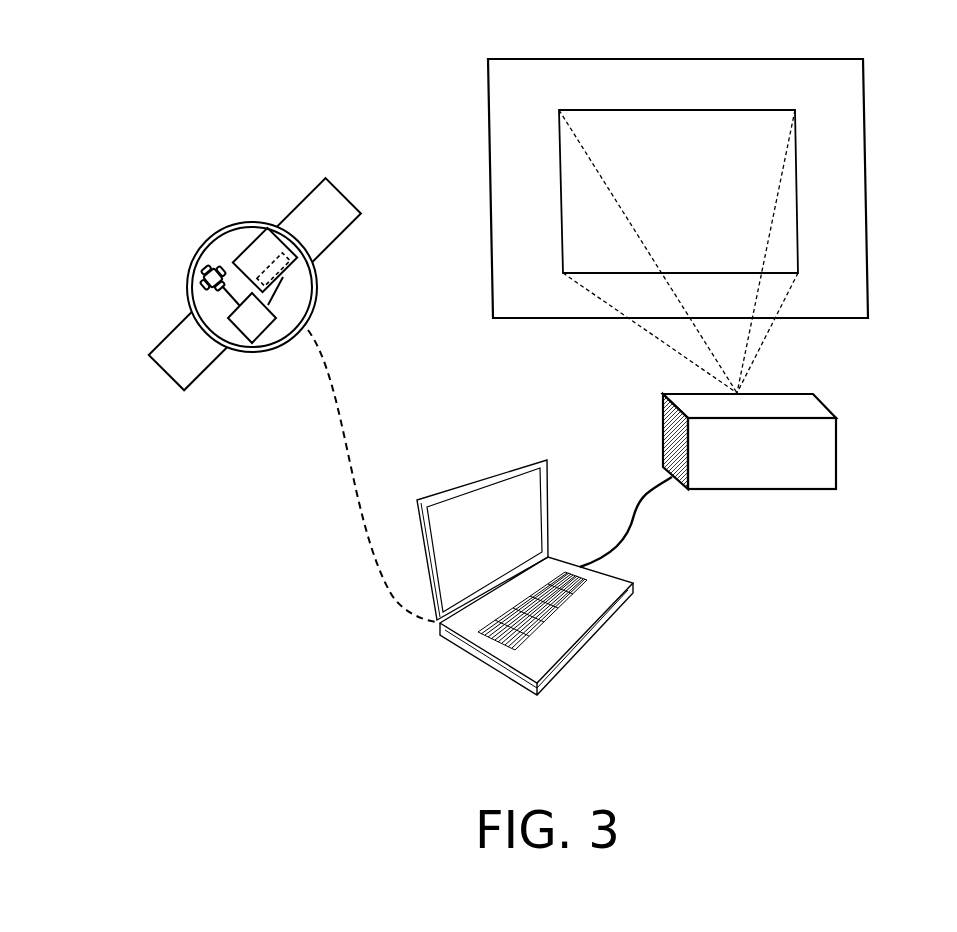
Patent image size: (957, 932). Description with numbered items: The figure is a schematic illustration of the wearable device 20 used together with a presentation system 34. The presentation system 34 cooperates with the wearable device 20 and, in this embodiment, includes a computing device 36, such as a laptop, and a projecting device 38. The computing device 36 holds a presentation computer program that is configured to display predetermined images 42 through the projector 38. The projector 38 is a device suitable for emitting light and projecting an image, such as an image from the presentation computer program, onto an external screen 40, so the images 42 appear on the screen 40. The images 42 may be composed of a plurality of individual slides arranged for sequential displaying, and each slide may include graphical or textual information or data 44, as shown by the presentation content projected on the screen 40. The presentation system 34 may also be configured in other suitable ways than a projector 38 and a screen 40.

The wearable device 20 is at (125, 292).
The presentation system 34 is at (738, 597).
The computing device 36 is at (480, 655).
The projecting device 38 is at (773, 490).
The external screen 40 is at (493, 262).
The predetermined images 42 is at (652, 110).
The graphical or textual information or data 44 is at (713, 172).